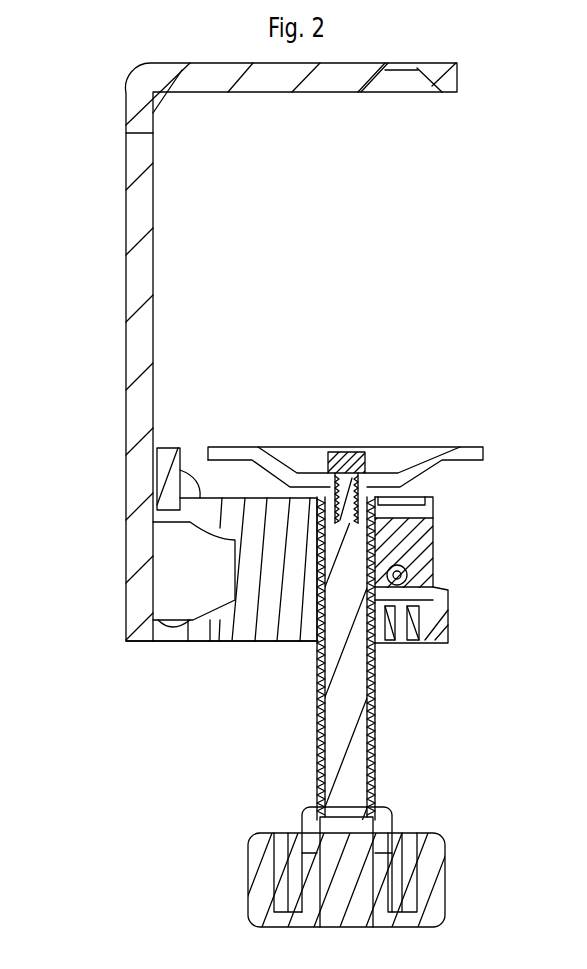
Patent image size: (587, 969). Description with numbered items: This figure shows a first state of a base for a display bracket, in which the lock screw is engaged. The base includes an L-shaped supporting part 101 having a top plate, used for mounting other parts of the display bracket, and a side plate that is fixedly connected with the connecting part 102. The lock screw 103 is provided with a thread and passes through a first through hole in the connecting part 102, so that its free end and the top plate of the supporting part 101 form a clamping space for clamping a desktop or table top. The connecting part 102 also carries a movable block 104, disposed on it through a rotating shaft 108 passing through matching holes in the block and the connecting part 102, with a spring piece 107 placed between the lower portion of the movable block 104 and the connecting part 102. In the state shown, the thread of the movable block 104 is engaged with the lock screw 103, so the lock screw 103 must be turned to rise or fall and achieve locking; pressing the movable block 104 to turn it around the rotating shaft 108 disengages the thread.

The supporting part 101 is at (127, 323).
The connecting part 102 is at (292, 593).
The lock screw 103 is at (347, 753).
The movable block 104 is at (432, 538).
The spring piece 107 is at (412, 627).
The rotating shaft 108 is at (407, 573).